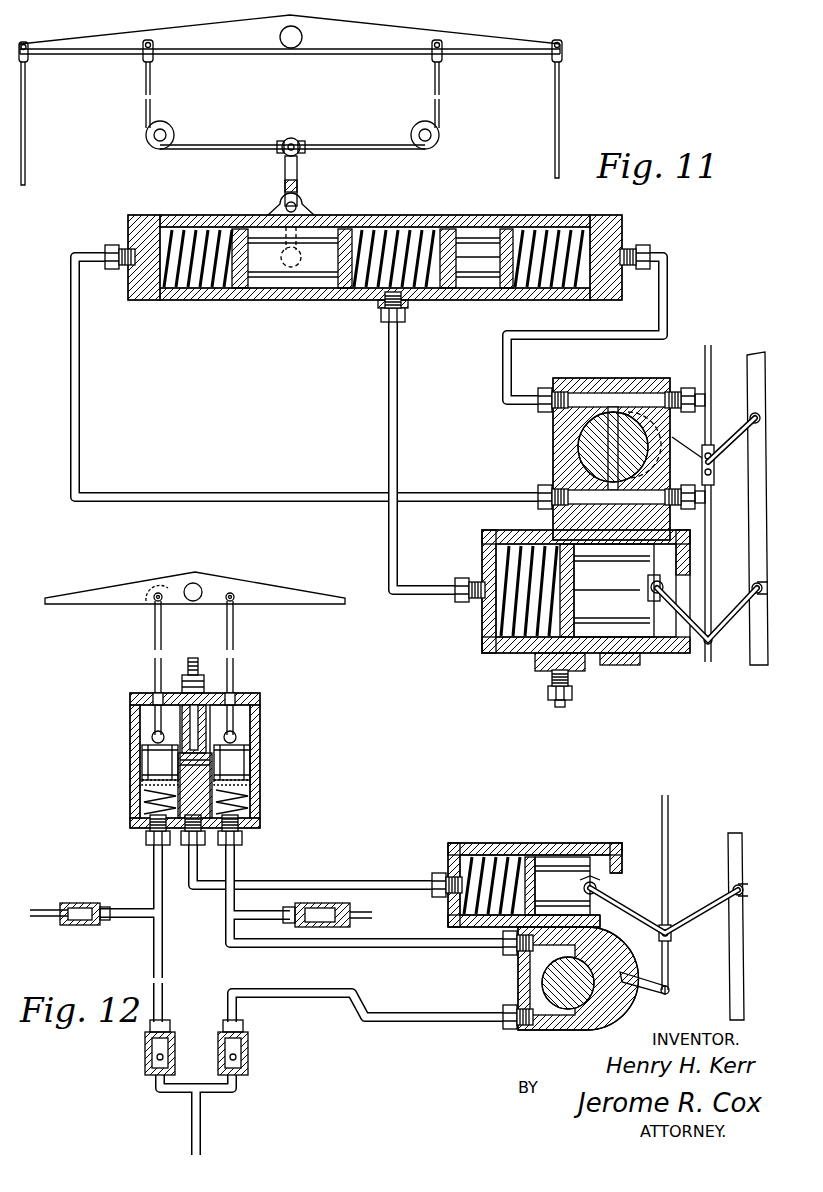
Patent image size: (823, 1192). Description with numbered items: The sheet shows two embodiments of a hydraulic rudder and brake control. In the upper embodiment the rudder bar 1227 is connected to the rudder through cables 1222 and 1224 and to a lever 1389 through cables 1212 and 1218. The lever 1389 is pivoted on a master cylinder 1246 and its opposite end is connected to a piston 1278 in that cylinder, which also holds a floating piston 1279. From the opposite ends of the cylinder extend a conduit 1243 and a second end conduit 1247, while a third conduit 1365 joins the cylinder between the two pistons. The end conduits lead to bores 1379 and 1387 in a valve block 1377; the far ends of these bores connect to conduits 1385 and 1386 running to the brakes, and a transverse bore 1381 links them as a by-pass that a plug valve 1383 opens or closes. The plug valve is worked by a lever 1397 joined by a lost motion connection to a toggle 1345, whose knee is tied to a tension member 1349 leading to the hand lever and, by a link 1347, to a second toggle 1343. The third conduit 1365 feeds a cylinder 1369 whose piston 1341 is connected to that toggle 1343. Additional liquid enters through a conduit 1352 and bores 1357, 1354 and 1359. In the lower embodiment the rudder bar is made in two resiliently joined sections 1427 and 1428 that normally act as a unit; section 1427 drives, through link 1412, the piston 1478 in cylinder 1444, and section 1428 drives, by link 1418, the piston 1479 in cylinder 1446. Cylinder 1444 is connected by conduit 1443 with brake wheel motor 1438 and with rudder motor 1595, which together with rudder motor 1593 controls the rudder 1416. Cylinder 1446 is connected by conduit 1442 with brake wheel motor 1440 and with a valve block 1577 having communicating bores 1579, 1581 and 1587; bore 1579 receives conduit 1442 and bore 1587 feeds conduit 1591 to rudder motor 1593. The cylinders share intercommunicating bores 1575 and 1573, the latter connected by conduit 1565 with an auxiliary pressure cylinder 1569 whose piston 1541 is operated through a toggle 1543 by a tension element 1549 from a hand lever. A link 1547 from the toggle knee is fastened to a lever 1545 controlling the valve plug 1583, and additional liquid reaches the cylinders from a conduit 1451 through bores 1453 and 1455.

In FIG. 11, the cable 1224 is at (27, 103).
In FIG. 11, the cable 1212 is at (152, 103).
In FIG. 11, the cable 1218 is at (435, 78).
In FIG. 11, the cable 1222 is at (560, 90).
In FIG. 11, the rudder bar 1227 is at (478, 50).
In FIG. 11, the lever 1389 is at (298, 172).
In FIG. 11, the master cylinder 1246 is at (456, 201).
In FIG. 11, the piston 1278 is at (310, 268).
In FIG. 11, the floating piston 1279 is at (480, 240).
In FIG. 11, the conduit 1243 is at (78, 367).
In FIG. 11, the pipe 1247 is at (666, 293).
In FIG. 11, the valve block 1377 is at (560, 467).
In FIG. 11, the bore 1379 is at (588, 398).
In FIG. 11, the transverse bore 1381 is at (552, 431).
In FIG. 11, the plug valve 1383 is at (582, 443).
In FIG. 11, the conduit 1385 is at (693, 395).
In FIG. 11, the lever 1397 is at (648, 432).
In FIG. 11, the conduit 1386 is at (698, 500).
In FIG. 11, the bore 1387 is at (565, 502).
In FIG. 11, the cylinder 1369 is at (480, 650).
In FIG. 11, the piston 1341 is at (623, 613).
In FIG. 11, the third conduit 1365 is at (450, 566).
In FIG. 11, the bore 1357 is at (547, 670).
In FIG. 11, the bore 1359 is at (603, 657).
In FIG. 11, the bore 1354 is at (573, 673).
In FIG. 11, the conduit 1352 is at (557, 708).
In FIG. 11, the tension member 1349 is at (711, 352).
In FIG. 11, the link 1347 is at (702, 538).
In FIG. 11, the toggle 1343 is at (725, 632).
In FIG. 11, the toggle 1345 is at (727, 443).
In FIG. 12, the rudder bar section 1428 is at (132, 570).
In FIG. 12, the rudder bar section 1427 is at (273, 605).
In FIG. 12, the link 1412 is at (156, 624).
In FIG. 12, the link 1418 is at (234, 625).
In FIG. 12, the cylinder 1444 is at (130, 717).
In FIG. 12, the cylinder 1446 is at (260, 733).
In FIG. 12, the bore 1453 is at (207, 697).
In FIG. 12, the bore 1455 is at (213, 737).
In FIG. 12, the conduit 1451 is at (213, 632).
In FIG. 12, the piston 1478 is at (157, 765).
In FIG. 12, the piston 1479 is at (235, 763).
In FIG. 12, the bore 1575 is at (257, 787).
In FIG. 12, the bore 1573 is at (257, 802).
In FIG. 12, the conduit 1443 is at (157, 863).
In FIG. 12, the conduit 1442 is at (234, 858).
In FIG. 12, the conduit 1565 is at (345, 887).
In FIG. 12, the brake wheel motor 1440 is at (352, 903).
In FIG. 12, the brake wheel motor 1438 is at (67, 927).
In FIG. 12, the rudder motor 1595 is at (143, 1053).
In FIG. 12, the rudder motor 1593 is at (245, 1043).
In FIG. 12, the conduit 1591 is at (413, 1023).
In FIG. 12, the rudder 1416 is at (192, 1110).
In FIG. 12, the auxiliary pressure cylinder 1569 is at (468, 847).
In FIG. 12, the piston 1541 is at (563, 873).
In FIG. 12, the valve block 1577 is at (590, 1030).
In FIG. 12, the bore 1581 is at (533, 977).
In FIG. 12, the valve plug 1583 is at (590, 1022).
In FIG. 12, the bore 1579 is at (518, 957).
In FIG. 12, the bore 1587 is at (543, 1027).
In FIG. 12, the tension element 1549 is at (668, 815).
In FIG. 12, the link 1547 is at (670, 957).
In FIG. 12, the toggle 1543 is at (700, 913).
In FIG. 12, the lever 1545 is at (647, 992).